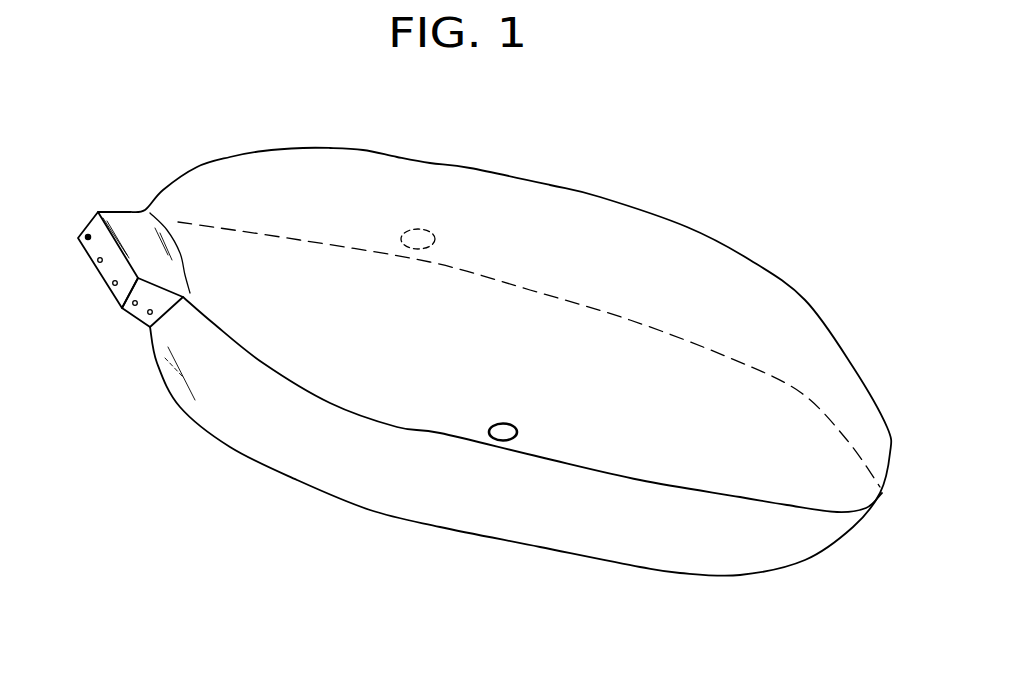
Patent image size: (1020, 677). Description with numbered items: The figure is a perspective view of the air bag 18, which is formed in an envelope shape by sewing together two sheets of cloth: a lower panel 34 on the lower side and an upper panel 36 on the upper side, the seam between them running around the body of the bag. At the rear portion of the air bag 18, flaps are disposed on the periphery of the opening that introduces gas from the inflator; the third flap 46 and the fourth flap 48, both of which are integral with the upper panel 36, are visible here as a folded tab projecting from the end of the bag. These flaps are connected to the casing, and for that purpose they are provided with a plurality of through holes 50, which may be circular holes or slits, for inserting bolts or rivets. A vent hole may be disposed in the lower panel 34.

The air bag 18 is at (584, 170).
The lower panel 34 is at (678, 560).
The upper panel 36 is at (678, 253).
The third flap 46 is at (105, 275).
The fourth flap 48 is at (137, 318).
The through holes 50 is at (86, 235).